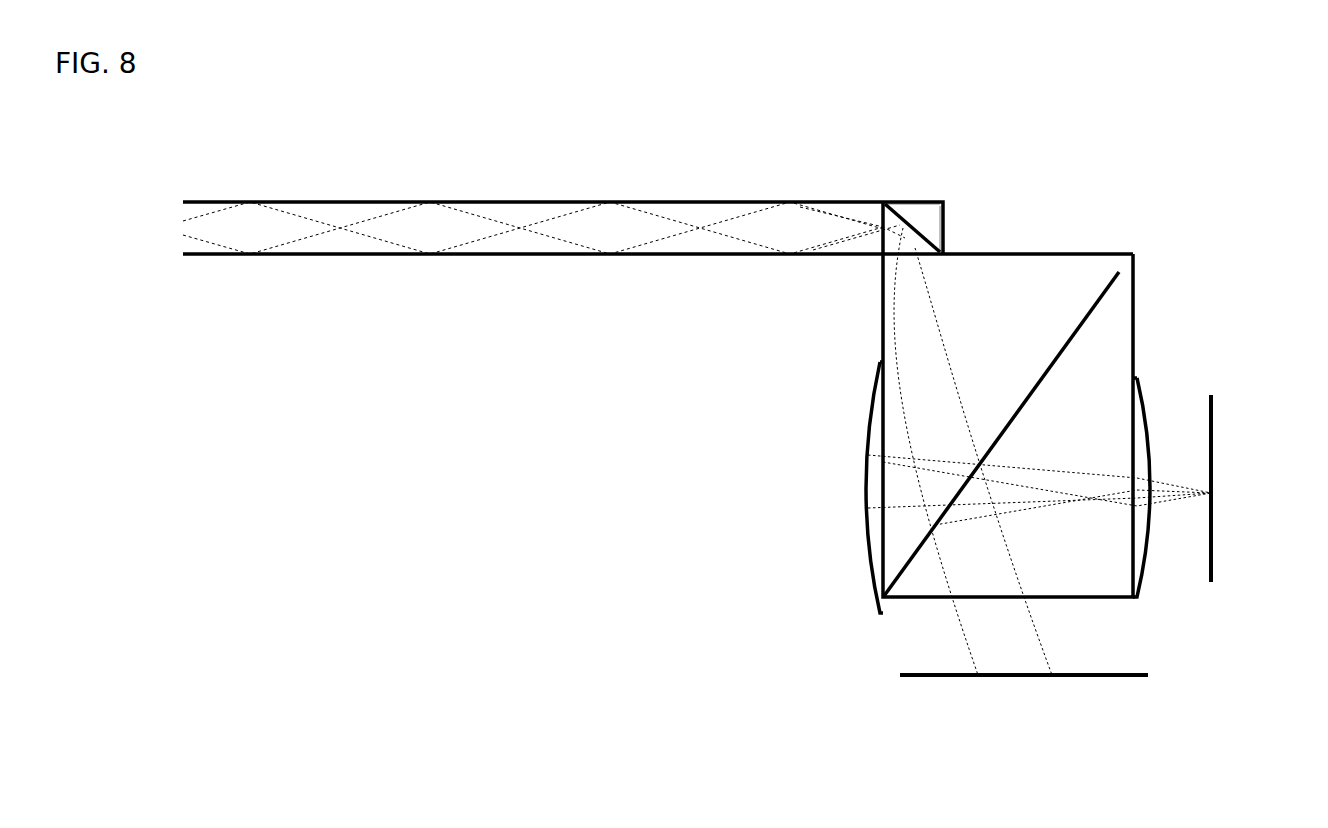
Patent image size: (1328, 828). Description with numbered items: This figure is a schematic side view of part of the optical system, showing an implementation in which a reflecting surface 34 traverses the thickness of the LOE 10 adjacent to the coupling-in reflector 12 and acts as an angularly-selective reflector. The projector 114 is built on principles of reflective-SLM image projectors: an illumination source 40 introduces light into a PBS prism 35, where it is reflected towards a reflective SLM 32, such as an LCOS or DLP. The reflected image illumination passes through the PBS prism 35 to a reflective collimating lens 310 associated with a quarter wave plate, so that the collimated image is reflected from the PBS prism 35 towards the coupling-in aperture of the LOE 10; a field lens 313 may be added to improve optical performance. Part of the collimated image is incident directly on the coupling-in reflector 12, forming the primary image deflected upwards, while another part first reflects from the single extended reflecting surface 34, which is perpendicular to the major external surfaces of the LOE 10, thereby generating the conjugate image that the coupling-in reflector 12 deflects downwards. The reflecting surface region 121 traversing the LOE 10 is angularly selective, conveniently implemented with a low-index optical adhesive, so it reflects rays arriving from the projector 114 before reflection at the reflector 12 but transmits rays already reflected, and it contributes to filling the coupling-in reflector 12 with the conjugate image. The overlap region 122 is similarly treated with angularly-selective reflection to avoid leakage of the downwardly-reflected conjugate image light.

The LOE 10 is at (623, 198).
The coupling-in reflector 12 is at (908, 212).
The reflecting surface region 121 is at (872, 210).
The overlap region 122 is at (913, 248).
The reflecting surface 34 is at (873, 298).
The PBS prism 35 is at (1050, 405).
The reflective collimating lens 310 is at (853, 480).
The field lens 313 is at (1153, 422).
The reflective SLM 32 is at (1212, 512).
The illumination source 40 is at (1009, 464).
The projector 114 is at (1162, 198).